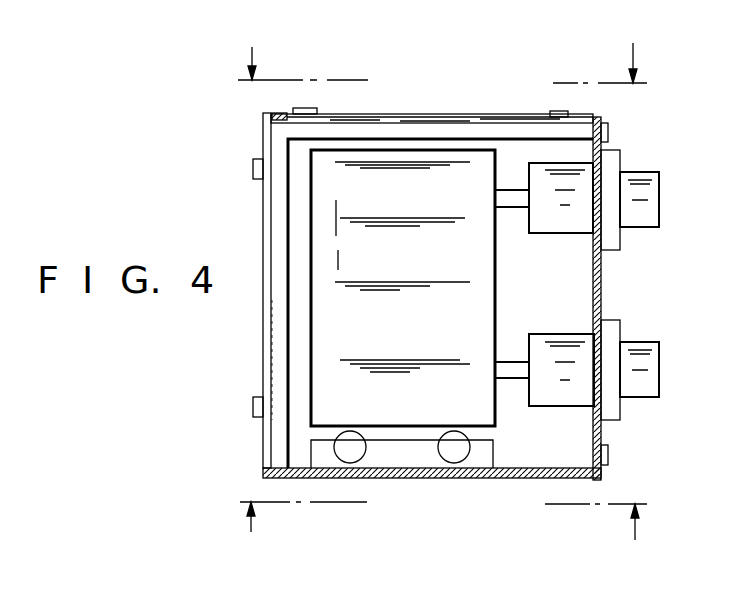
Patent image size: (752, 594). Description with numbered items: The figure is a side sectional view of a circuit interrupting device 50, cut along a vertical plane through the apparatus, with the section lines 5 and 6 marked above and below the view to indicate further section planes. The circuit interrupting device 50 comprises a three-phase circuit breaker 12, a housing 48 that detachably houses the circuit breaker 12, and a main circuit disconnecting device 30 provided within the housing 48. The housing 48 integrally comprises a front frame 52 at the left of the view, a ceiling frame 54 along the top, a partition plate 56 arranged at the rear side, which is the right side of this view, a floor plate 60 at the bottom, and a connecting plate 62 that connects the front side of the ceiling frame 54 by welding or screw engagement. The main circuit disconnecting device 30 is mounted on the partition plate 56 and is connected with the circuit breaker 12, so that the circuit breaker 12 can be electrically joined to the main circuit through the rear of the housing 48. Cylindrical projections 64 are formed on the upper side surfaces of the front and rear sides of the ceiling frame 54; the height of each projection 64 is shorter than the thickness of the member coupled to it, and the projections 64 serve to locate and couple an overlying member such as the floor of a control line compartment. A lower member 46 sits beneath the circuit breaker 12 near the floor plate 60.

The section line 5- 5 is at (442, 51).
The section line 6- 6 is at (443, 534).
The three-phase circuit breaker 12 is at (310, 347).
The main circuit disconnecting device 30 is at (583, 235).
The lower tray 46 is at (495, 455).
The housing 48 is at (303, 378).
The circuit interrupting device 50 is at (493, 112).
The front frame 52 is at (271, 228).
The ceiling frame 54 is at (450, 118).
The partition plate 56 is at (602, 296).
The floor plate 60 is at (414, 478).
The connecting plate 62 is at (280, 112).
The cylindrical projection 64 is at (305, 108).